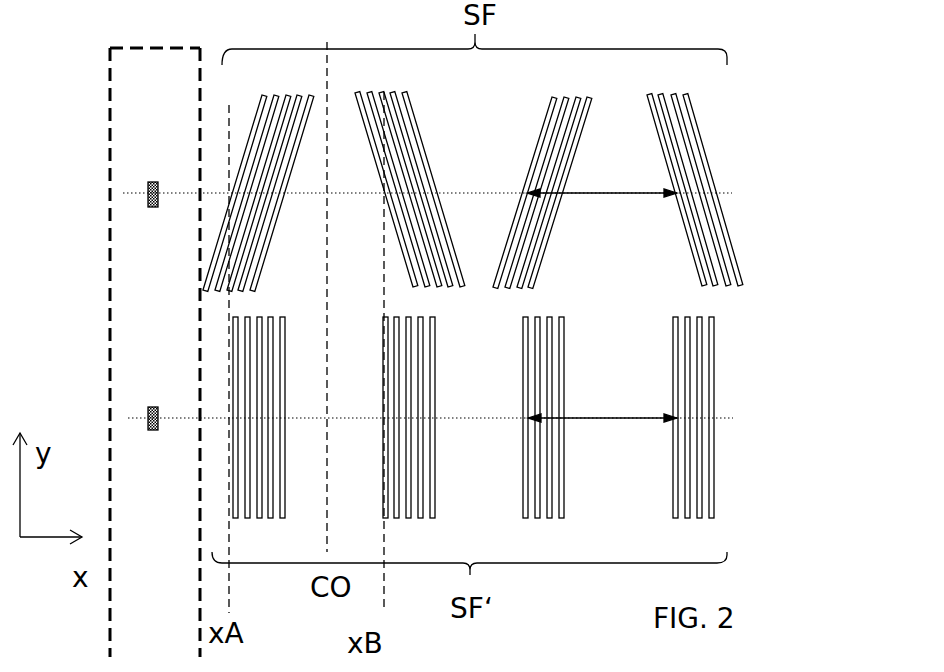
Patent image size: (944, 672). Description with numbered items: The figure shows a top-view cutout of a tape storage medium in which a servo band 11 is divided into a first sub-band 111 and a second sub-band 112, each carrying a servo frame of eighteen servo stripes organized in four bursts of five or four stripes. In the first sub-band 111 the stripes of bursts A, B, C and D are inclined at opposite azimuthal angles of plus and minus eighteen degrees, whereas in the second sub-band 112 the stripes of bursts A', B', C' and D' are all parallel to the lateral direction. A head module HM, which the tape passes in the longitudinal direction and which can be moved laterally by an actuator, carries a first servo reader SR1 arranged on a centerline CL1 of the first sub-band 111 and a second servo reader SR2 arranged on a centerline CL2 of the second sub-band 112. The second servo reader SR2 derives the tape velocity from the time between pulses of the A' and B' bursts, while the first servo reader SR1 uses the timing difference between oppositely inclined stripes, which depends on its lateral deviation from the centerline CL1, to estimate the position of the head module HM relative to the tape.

The servo band 11 is at (555, 307).
The first sub-band 111 is at (720, 68).
The second sub-band 112 is at (532, 426).
The head module HM is at (110, 203).
The first servo reader SR1 is at (148, 207).
The second servo reader SR2 is at (148, 423).
The first centerline CL1 is at (193, 203).
The second centerline CL2 is at (194, 418).